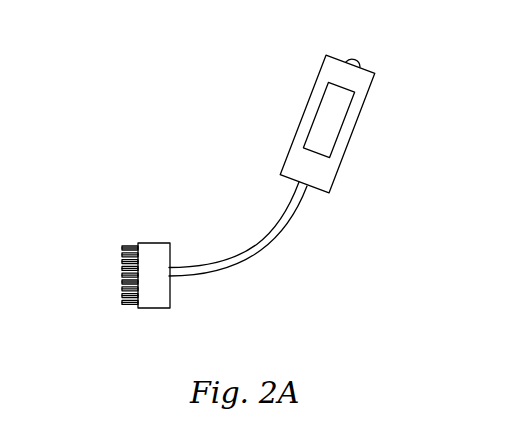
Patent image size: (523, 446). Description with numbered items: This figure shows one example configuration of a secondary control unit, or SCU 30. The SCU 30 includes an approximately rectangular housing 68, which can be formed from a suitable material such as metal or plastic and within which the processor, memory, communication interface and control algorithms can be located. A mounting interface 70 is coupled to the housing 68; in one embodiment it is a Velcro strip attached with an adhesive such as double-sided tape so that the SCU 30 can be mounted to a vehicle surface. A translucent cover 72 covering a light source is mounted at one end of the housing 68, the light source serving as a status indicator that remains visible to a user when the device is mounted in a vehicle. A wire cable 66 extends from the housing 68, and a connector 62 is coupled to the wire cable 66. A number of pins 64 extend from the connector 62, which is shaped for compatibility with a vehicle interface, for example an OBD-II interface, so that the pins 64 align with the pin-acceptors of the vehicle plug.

The secondary control unit 30 is at (138, 59).
The connector 62 is at (150, 243).
The pins 64 is at (123, 268).
The wire cable 66 is at (252, 255).
The housing 68 is at (296, 133).
The mounting interface 70 is at (328, 115).
The translucent cover 72 is at (352, 56).